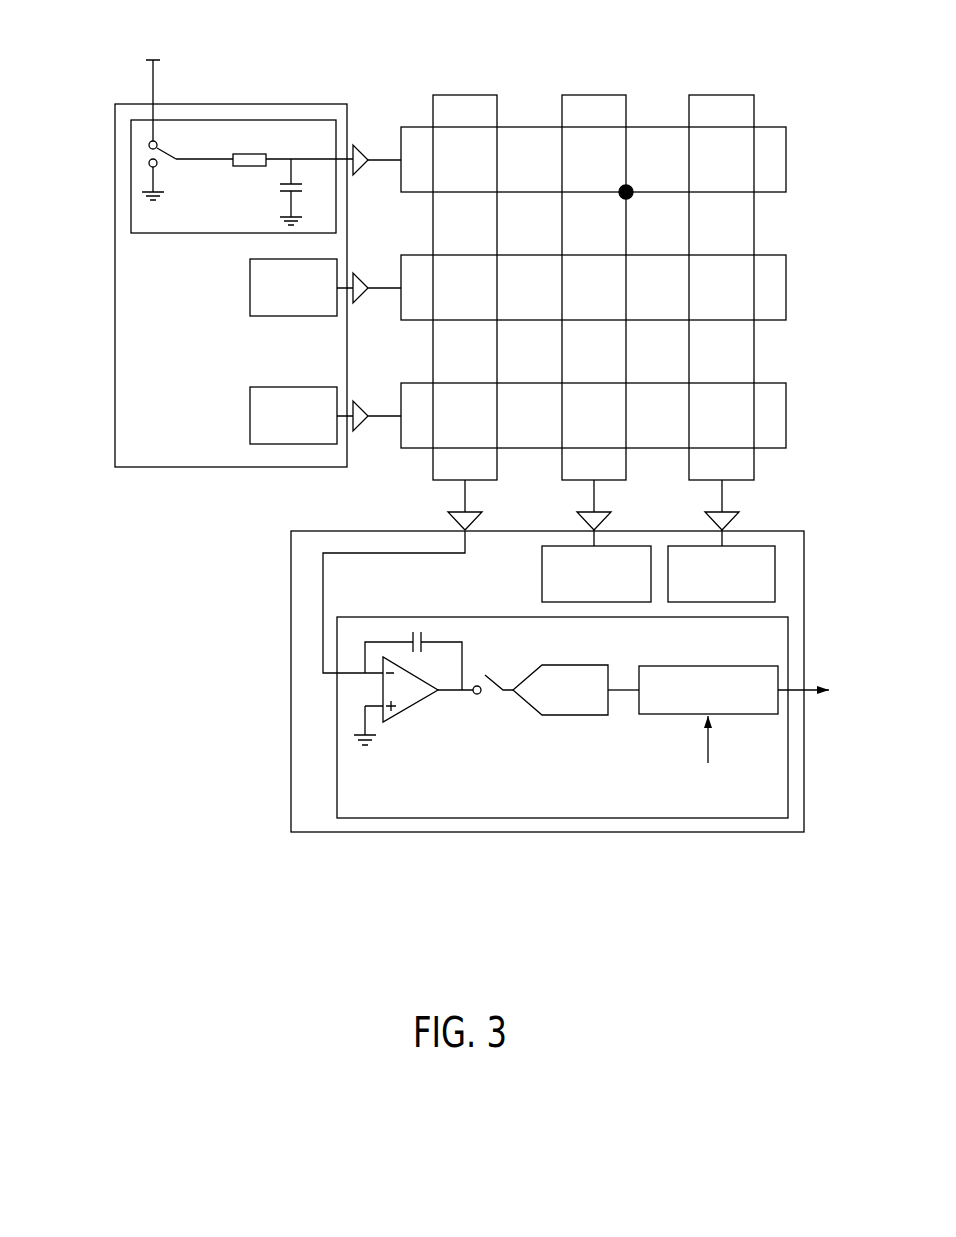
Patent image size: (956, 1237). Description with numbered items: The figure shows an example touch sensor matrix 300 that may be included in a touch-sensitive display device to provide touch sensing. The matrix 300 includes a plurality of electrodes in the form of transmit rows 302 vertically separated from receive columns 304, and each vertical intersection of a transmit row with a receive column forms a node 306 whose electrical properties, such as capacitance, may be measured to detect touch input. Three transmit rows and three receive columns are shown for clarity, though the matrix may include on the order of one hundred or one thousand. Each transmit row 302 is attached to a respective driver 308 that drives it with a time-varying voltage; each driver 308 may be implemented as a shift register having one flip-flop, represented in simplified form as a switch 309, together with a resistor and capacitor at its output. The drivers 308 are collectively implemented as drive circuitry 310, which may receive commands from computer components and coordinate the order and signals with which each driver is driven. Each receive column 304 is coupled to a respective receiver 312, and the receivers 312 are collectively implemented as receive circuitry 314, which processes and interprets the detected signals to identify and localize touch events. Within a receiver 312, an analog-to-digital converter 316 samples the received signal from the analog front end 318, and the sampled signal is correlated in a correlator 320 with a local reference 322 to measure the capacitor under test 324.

The touch sensor matrix 300 is at (94, 343).
The transmit rows 302 is at (816, 161).
The receive columns 304 is at (464, 71).
The node 306 is at (630, 198).
The driver 308 is at (231, 252).
The switch 309 is at (168, 171).
The drive circuitry 310 is at (227, 104).
The receiver 312 is at (483, 617).
The receive circuitry 314 is at (401, 531).
The analog-to-digital converter 316 is at (596, 715).
The analog front end 318 is at (403, 712).
The correlator 320 is at (700, 666).
The local reference 322 is at (639, 777).
The capacitor under test 324 is at (812, 688).